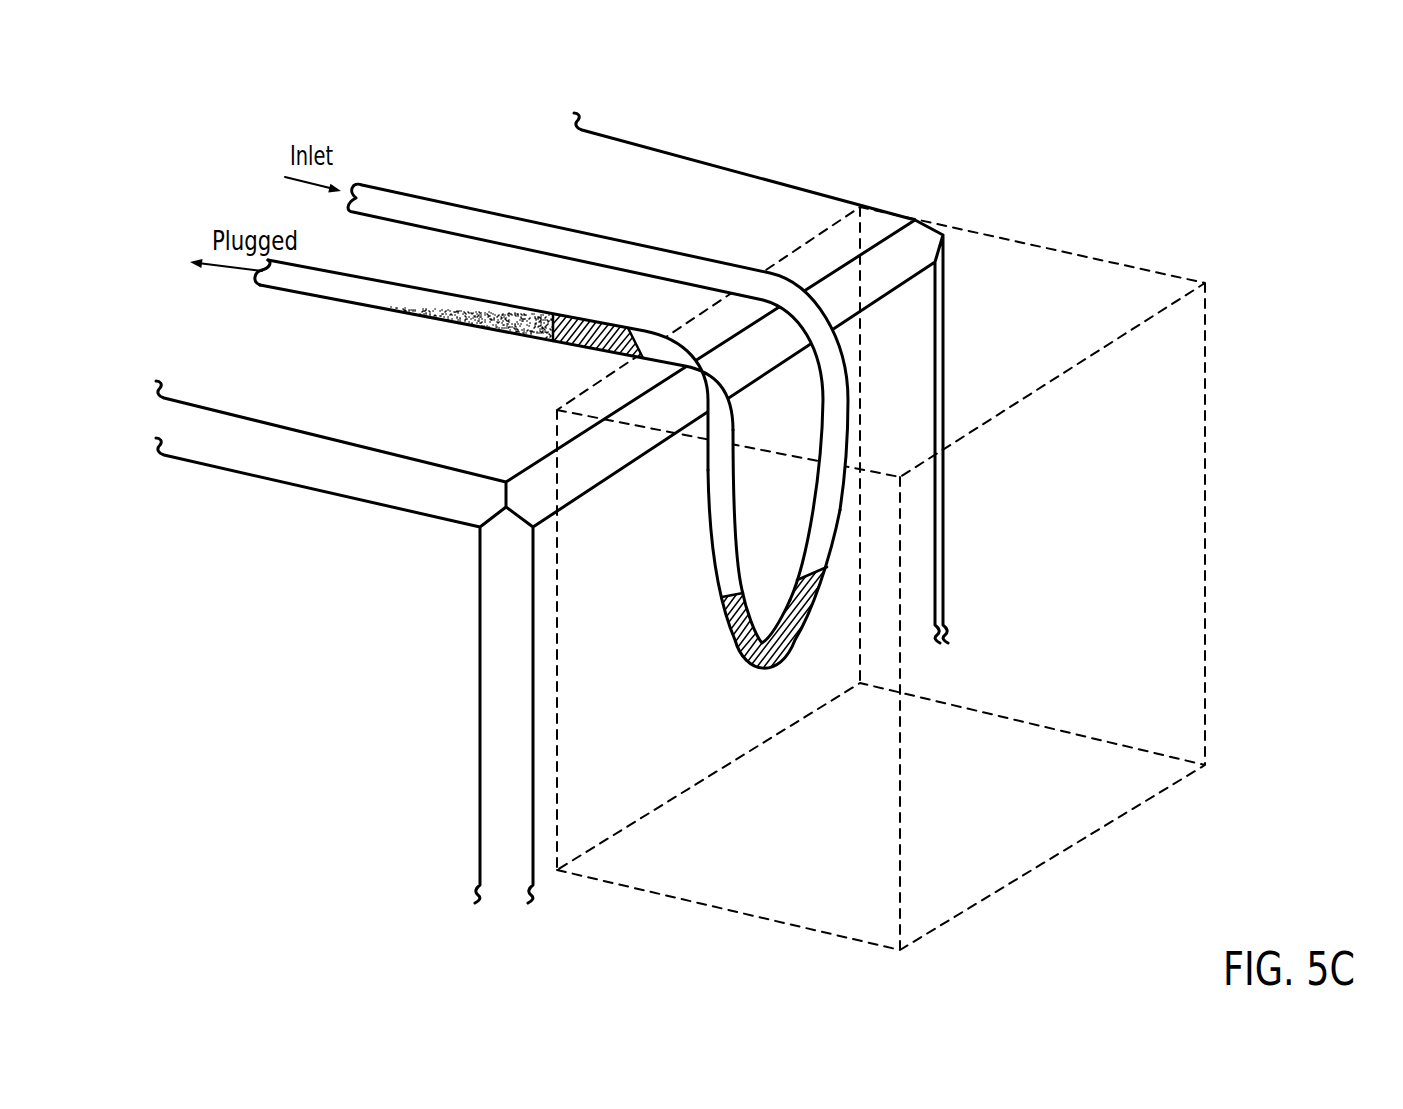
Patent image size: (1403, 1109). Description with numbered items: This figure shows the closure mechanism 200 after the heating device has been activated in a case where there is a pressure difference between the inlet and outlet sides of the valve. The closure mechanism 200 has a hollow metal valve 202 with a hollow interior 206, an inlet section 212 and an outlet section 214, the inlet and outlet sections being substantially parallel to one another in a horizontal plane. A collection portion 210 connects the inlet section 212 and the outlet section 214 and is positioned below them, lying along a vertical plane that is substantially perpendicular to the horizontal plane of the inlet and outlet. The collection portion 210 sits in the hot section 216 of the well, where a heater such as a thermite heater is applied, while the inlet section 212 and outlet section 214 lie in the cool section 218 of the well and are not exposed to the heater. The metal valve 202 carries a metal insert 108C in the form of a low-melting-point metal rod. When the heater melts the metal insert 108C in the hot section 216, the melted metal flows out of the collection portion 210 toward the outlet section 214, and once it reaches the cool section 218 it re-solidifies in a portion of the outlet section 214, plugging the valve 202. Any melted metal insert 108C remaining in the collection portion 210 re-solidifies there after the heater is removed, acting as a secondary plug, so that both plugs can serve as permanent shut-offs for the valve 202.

The closure mechanism 200 is at (221, 131).
The hollow metal valve 202 is at (502, 335).
The hollow interior 206 is at (368, 304).
The collection portion 210 is at (740, 670).
The inlet section 212 is at (422, 206).
The outlet section 214 is at (288, 278).
The hot section 216 is at (881, 578).
The cool section 218 is at (552, 508).
The metal insert 108C is at (578, 342).